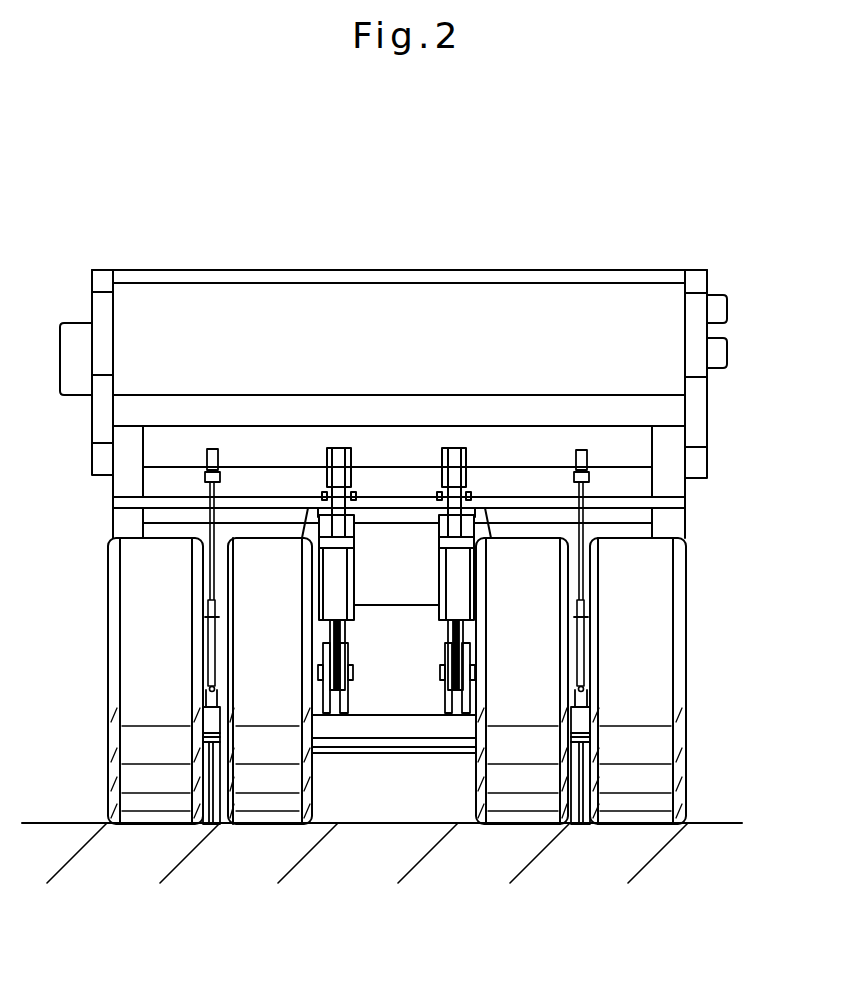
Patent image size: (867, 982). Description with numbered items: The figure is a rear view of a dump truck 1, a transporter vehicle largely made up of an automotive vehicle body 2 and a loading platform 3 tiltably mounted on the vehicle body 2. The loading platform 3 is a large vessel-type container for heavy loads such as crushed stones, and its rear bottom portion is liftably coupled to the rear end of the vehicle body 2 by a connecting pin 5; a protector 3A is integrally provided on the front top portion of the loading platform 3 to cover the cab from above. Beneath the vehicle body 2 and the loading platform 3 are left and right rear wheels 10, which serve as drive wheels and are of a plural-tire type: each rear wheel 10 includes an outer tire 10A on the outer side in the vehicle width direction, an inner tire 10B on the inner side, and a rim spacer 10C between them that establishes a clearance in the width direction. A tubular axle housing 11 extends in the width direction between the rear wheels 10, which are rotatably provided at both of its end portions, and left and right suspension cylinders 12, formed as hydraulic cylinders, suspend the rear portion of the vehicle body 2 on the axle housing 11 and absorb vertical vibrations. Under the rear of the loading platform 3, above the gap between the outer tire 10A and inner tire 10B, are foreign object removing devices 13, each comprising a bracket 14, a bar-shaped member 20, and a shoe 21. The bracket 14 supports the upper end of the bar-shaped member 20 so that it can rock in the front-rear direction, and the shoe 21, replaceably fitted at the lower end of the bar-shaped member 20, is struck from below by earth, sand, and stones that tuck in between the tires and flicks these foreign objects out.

The dump truck 1 is at (596, 269).
The vehicle body 2 is at (383, 517).
The loading platform 3 is at (245, 287).
The protector 3A is at (150, 278).
The connecting pin 5 is at (320, 494).
The rear wheels 10 is at (140, 757).
The outer tire 10A is at (157, 805).
The inner tire 10B is at (293, 805).
The rim spacer 10C is at (212, 812).
The axle housing 11 is at (397, 727).
The suspension cylinder 12 is at (343, 598).
The foreign object removing device 13 is at (198, 606).
The bracket 14 is at (207, 463).
The bar-shaped member 20 is at (212, 527).
The shoe 21 is at (208, 688).